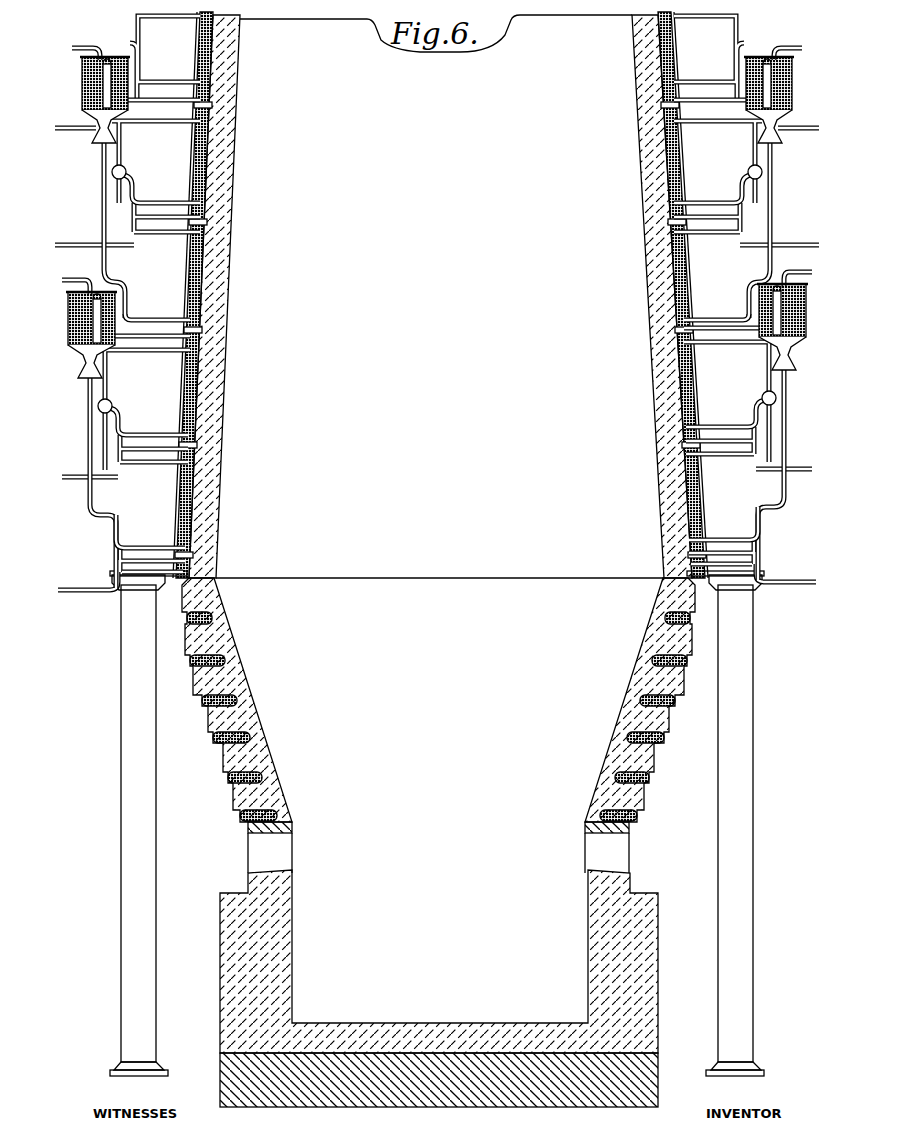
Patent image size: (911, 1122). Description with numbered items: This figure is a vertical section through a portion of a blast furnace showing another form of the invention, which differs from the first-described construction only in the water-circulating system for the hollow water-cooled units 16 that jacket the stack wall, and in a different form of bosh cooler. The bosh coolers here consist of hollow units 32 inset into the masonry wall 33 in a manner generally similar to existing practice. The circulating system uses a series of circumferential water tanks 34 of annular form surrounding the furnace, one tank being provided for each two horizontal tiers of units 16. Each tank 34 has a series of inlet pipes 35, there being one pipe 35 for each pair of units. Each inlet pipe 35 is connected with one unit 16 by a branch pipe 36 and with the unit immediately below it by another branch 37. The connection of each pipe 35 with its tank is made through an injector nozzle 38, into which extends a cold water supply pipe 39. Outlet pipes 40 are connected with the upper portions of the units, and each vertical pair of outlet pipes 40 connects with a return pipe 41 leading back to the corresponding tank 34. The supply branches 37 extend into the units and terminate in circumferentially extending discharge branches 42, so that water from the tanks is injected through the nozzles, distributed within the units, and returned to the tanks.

The hollow water-cooled unit 16 is at (665, 172).
The hollow unit 32 is at (247, 736).
The masonry wall 33 is at (262, 750).
The circumferential water tank 34 is at (82, 82).
The inlet pipe 35 is at (780, 168).
The branch pipe 36 is at (164, 206).
The branch 37 is at (157, 324).
The injector nozzle 38 is at (97, 132).
The cold water supply pipe 39 is at (72, 48).
The outlet pipe 40 is at (710, 110).
The return pipe 41 is at (115, 192).
The discharge branch 42 is at (207, 221).